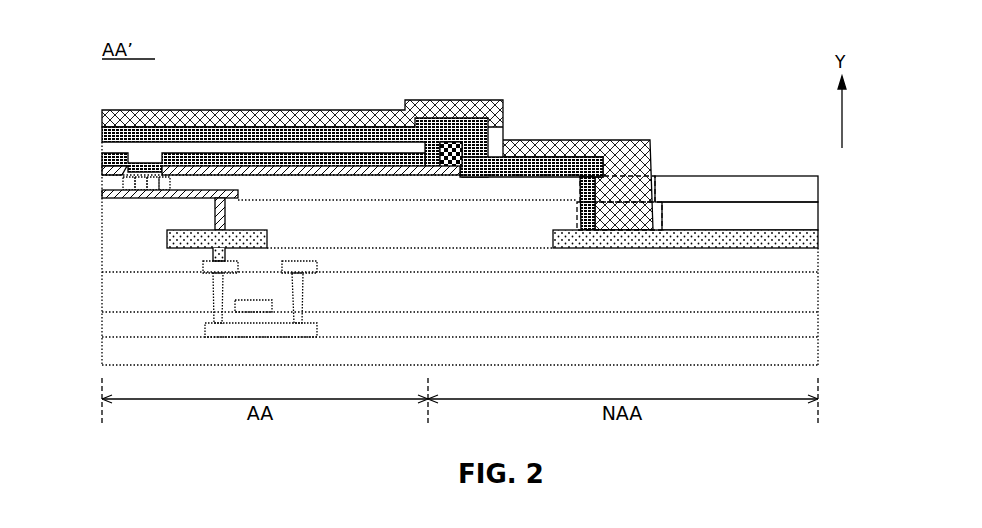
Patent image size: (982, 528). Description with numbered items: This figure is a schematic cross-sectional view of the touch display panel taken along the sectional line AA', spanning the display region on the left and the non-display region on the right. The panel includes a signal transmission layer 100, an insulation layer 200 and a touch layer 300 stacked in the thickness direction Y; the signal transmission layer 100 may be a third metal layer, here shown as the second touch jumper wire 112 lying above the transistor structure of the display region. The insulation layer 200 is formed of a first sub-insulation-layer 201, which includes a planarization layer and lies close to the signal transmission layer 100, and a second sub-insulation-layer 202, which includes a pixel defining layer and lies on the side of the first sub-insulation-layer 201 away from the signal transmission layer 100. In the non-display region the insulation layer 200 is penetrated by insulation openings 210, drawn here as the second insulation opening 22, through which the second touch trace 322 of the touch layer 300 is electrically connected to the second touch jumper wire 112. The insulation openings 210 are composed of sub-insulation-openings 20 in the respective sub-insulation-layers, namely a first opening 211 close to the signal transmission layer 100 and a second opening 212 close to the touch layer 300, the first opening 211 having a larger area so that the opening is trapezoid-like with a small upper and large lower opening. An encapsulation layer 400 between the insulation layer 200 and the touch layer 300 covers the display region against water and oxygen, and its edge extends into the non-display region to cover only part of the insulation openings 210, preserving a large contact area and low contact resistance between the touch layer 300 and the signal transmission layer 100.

The encapsulation layer 400 is at (424, 149).
The touch layer 300 is at (377, 165).
The second touch trace 322 is at (502, 123).
The second insulation opening 22 is at (650, 68).
The insulation openings 210 is at (453, 149).
The first opening 211 is at (662, 212).
The second opening 212 is at (657, 182).
The sub-insulation-openings 20 is at (668, 203).
The insulation layer 200 is at (805, 202).
The first sub-insulation-layer 201 is at (818, 212).
The second sub-insulation-layer 202 is at (818, 183).
The signal transmission layer 100 is at (746, 239).
The second touch jumper wire 112 is at (818, 231).